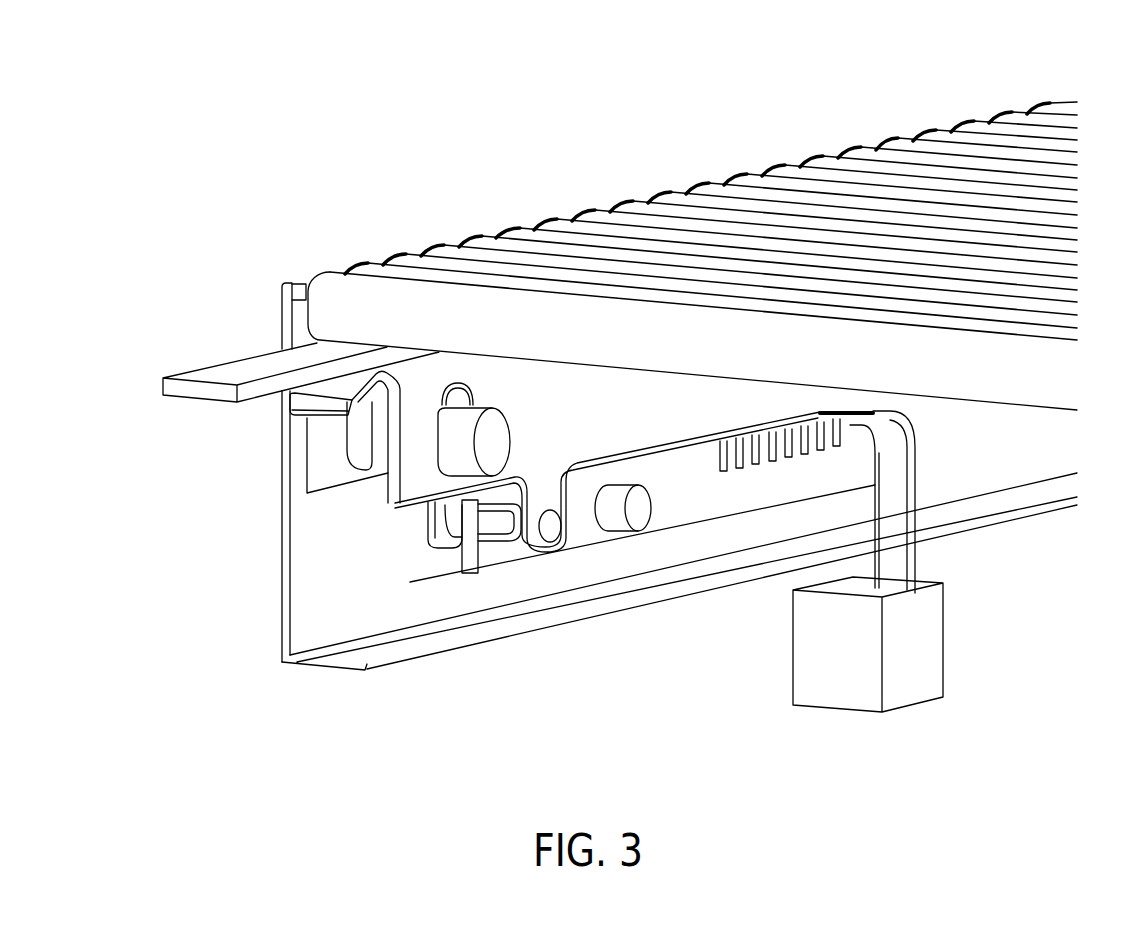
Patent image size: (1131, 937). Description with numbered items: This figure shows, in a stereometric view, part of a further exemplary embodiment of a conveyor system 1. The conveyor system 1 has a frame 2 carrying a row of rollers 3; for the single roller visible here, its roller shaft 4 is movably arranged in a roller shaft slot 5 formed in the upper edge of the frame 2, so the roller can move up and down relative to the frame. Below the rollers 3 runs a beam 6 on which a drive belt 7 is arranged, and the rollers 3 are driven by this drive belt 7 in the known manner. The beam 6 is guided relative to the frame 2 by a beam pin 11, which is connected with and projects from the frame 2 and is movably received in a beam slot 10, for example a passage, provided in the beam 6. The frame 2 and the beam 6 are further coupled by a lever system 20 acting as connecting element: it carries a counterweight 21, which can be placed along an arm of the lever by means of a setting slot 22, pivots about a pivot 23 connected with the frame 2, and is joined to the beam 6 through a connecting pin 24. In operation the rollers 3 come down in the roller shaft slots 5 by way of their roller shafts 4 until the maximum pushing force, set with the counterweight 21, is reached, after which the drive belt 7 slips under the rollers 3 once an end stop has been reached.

The conveyor system 1 is at (403, 187).
The frame 2 is at (287, 540).
The rollers 3 is at (685, 197).
The roller shaft 4 is at (303, 282).
The roller shaft slot 5 is at (283, 298).
The beam 6 is at (377, 437).
The drive belt 7 is at (238, 372).
The beam slot 10 is at (433, 442).
The beam pin 11 is at (373, 465).
The lever system 20 is at (697, 530).
The counterweight 21 is at (815, 643).
The setting slot 22 is at (777, 462).
The pivot 23 is at (638, 510).
The connecting pin 24 is at (550, 532).